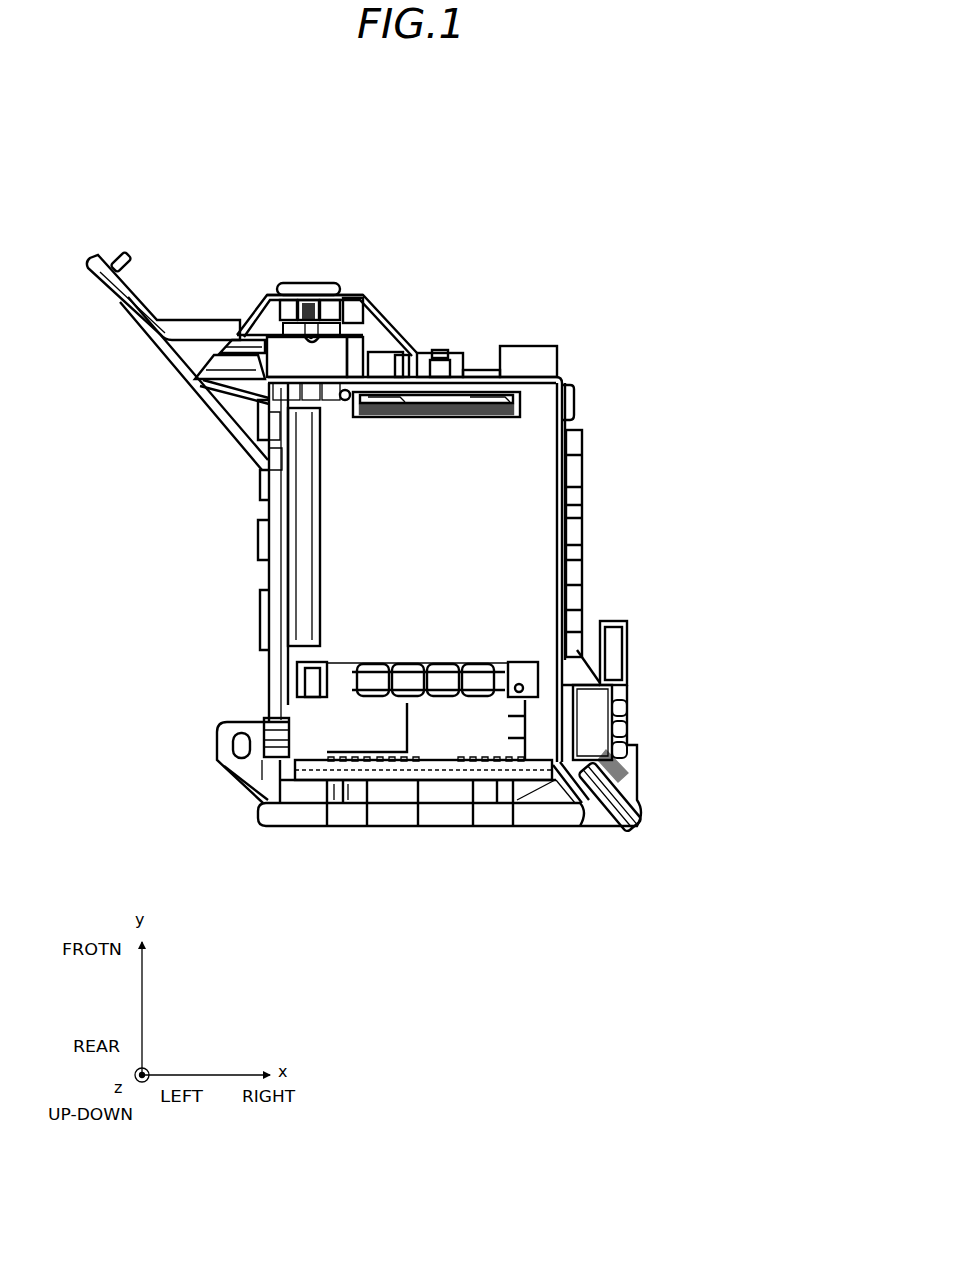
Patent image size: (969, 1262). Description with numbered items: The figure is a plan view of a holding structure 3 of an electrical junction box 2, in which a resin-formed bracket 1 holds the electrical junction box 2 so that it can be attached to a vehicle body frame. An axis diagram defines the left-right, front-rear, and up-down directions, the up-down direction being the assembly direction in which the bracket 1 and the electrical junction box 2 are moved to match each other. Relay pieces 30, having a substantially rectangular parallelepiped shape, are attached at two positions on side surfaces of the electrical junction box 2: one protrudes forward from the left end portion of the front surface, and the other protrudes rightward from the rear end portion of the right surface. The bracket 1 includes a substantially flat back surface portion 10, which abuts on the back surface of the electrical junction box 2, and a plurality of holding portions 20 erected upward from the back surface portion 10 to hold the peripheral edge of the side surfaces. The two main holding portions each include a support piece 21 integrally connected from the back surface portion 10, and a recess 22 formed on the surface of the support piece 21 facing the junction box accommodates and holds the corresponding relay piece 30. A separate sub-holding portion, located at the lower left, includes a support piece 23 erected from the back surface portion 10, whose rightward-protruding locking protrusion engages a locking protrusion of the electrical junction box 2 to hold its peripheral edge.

The bracket 1 is at (372, 278).
The electrical junction box 2 is at (528, 434).
The holding structure 3 is at (630, 151).
The back surface portion 10 is at (434, 842).
The holding portions 20 is at (290, 278).
The support piece 21 is at (302, 325).
The recess 22 is at (321, 322).
The support piece 23 is at (268, 740).
The relay piece 30 is at (328, 355).